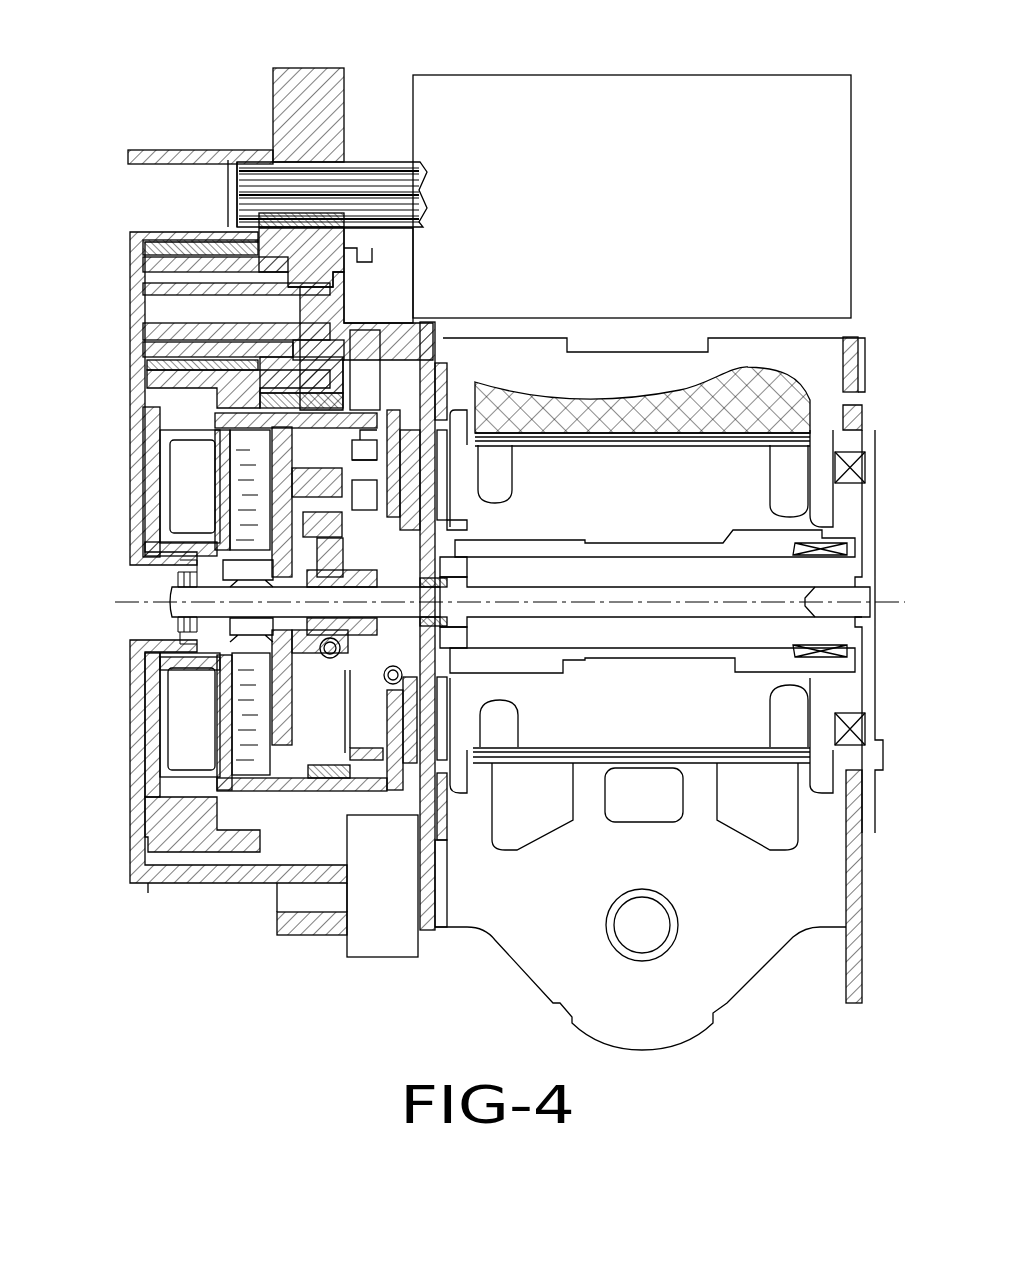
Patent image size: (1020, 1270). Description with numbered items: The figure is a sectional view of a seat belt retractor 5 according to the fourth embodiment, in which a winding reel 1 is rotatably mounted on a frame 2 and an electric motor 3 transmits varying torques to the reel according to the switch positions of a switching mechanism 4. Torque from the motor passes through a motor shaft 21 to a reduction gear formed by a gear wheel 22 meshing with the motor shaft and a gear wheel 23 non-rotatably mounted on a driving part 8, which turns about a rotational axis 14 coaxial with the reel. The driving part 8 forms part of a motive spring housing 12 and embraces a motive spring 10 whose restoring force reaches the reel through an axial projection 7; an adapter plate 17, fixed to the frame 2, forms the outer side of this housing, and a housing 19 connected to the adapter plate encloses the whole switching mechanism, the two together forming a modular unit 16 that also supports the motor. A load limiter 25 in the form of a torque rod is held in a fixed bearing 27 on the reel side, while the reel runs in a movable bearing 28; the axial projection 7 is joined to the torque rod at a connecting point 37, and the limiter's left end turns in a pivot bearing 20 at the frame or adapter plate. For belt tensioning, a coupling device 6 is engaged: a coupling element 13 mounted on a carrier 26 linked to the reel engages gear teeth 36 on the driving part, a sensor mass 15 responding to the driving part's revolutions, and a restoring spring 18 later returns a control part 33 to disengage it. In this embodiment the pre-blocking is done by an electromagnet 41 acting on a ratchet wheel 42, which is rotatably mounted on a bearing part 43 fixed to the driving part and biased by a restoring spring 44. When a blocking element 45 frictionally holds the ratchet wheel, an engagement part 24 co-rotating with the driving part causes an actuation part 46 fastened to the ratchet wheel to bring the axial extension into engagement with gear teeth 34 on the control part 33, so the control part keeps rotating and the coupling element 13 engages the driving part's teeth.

The winding reel 1 is at (700, 707).
The frame 2 is at (780, 910).
The electric motor 3 is at (487, 102).
The switching mechanism 4 is at (125, 373).
The seat belt retractor 5 is at (750, 385).
The coupling device 6 is at (210, 503).
The axial projection 7 is at (197, 613).
The driving part 8 is at (215, 415).
The motive spring 10 is at (245, 533).
The motive spring housing 12 is at (443, 357).
The coupling element 13 is at (310, 460).
The rotational axis 14 is at (772, 600).
The sensor mass 15 is at (245, 567).
The modular unit 16 is at (140, 900).
The adapter plate 17 is at (310, 928).
The restoring spring 18 is at (385, 679).
The housing 19 is at (150, 328).
The pivot bearing 20 is at (432, 558).
The motor shaft 21 is at (233, 198).
The gear wheel 22 is at (293, 247).
The gear wheel 23 is at (170, 843).
The engagement part 24 is at (365, 440).
The load limiter 25 is at (690, 603).
The carrier 26 is at (293, 575).
The fixed bearing 27 is at (557, 547).
The movable bearing 28 is at (818, 537).
The control part 33 is at (321, 641).
The gear teeth 34 is at (367, 756).
The gear teeth 36 is at (313, 767).
The connecting point 37 is at (447, 638).
The electromagnet 41 is at (383, 912).
The ratchet wheel 42 is at (420, 713).
The bearing part 43 is at (393, 703).
The restoring spring 44 is at (322, 656).
The blocking element 45 is at (420, 827).
The actuation part 46 is at (463, 547).